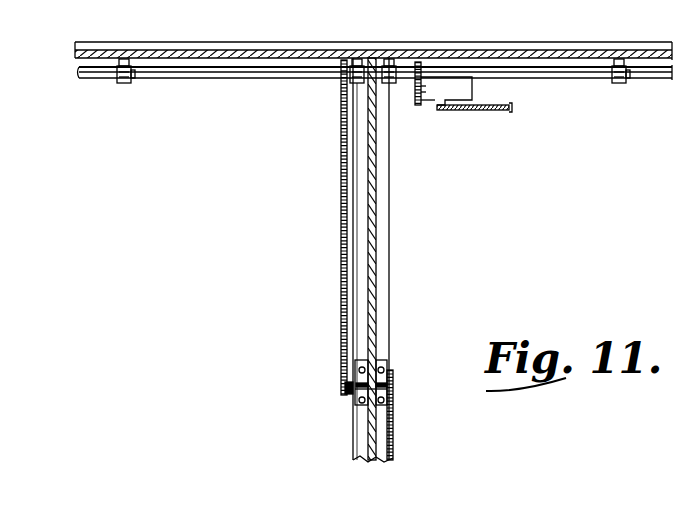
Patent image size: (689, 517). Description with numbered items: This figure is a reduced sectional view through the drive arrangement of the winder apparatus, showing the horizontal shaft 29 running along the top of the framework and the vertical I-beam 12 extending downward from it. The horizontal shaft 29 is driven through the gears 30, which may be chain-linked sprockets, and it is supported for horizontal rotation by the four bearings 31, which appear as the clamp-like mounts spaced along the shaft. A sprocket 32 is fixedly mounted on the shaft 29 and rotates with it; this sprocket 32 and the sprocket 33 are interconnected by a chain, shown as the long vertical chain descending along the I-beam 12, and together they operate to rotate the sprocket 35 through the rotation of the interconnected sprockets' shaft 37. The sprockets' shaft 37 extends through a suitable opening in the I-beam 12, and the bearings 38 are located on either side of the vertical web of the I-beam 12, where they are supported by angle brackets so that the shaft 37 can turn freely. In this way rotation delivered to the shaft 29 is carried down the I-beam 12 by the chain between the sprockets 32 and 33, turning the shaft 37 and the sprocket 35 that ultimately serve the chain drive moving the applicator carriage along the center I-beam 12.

The I-beam 12 is at (370, 181).
The horizontal shaft 29 is at (232, 77).
The gears 30 is at (408, 99).
The bearings 31 is at (126, 85).
The sprocket 32 is at (340, 276).
The sprocket 33 is at (342, 389).
The sprocket 35 is at (393, 370).
The sprockets' shaft 37 is at (352, 392).
The bearings 38 is at (356, 367).